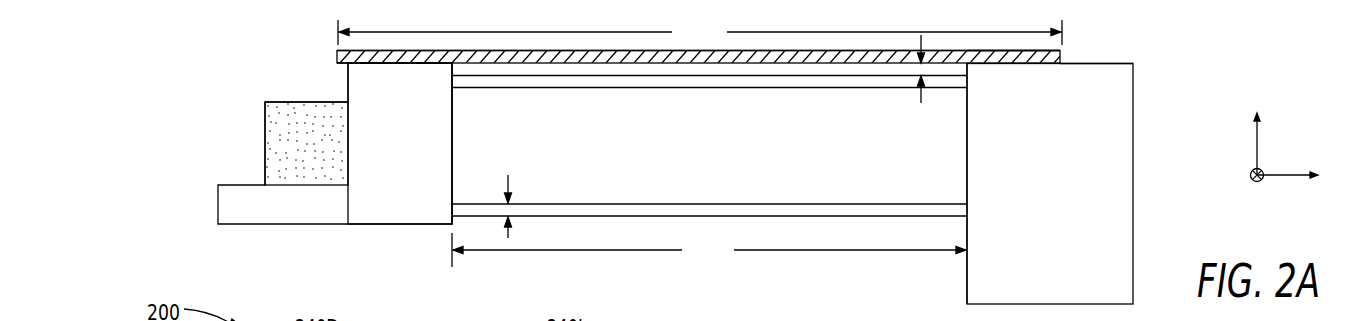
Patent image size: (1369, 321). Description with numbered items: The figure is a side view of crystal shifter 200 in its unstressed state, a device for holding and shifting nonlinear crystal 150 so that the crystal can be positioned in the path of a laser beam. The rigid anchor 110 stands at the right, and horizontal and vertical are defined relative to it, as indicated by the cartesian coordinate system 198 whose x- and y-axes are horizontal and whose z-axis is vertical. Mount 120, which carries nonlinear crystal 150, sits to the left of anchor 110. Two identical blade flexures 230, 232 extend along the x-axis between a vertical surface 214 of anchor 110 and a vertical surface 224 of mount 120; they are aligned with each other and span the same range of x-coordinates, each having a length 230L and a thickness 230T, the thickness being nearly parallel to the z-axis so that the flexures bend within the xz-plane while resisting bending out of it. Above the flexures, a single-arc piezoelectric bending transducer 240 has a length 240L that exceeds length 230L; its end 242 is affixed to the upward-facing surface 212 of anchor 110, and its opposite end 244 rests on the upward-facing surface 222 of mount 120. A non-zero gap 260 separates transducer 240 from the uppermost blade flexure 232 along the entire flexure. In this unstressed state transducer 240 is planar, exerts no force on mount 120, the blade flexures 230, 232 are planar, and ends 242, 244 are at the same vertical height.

The crystal shifter 200 is at (234, 52).
The anchor 110 is at (1065, 197).
The mount 120 is at (413, 167).
The nonlinear crystal 150 is at (322, 154).
The cartesian coordinate system 198 is at (1243, 127).
The upward-facing surface of anchor 212 is at (1072, 60).
The vertical surface of anchor 214 is at (964, 157).
The upward-facing surface of mount 222 is at (377, 59).
The vertical surface of mount 224 is at (455, 143).
The blade flexure 230 is at (768, 204).
The length of blade flexure 230L is at (709, 250).
The thickness of blade flexure 230T is at (510, 194).
The blade flexure 232 is at (767, 89).
The single-arc transducer 240 is at (537, 63).
The length of transducer 240L is at (700, 34).
The end of transducer 242 is at (1008, 43).
The end of transducer 244 is at (394, 45).
The gap 260 is at (920, 83).